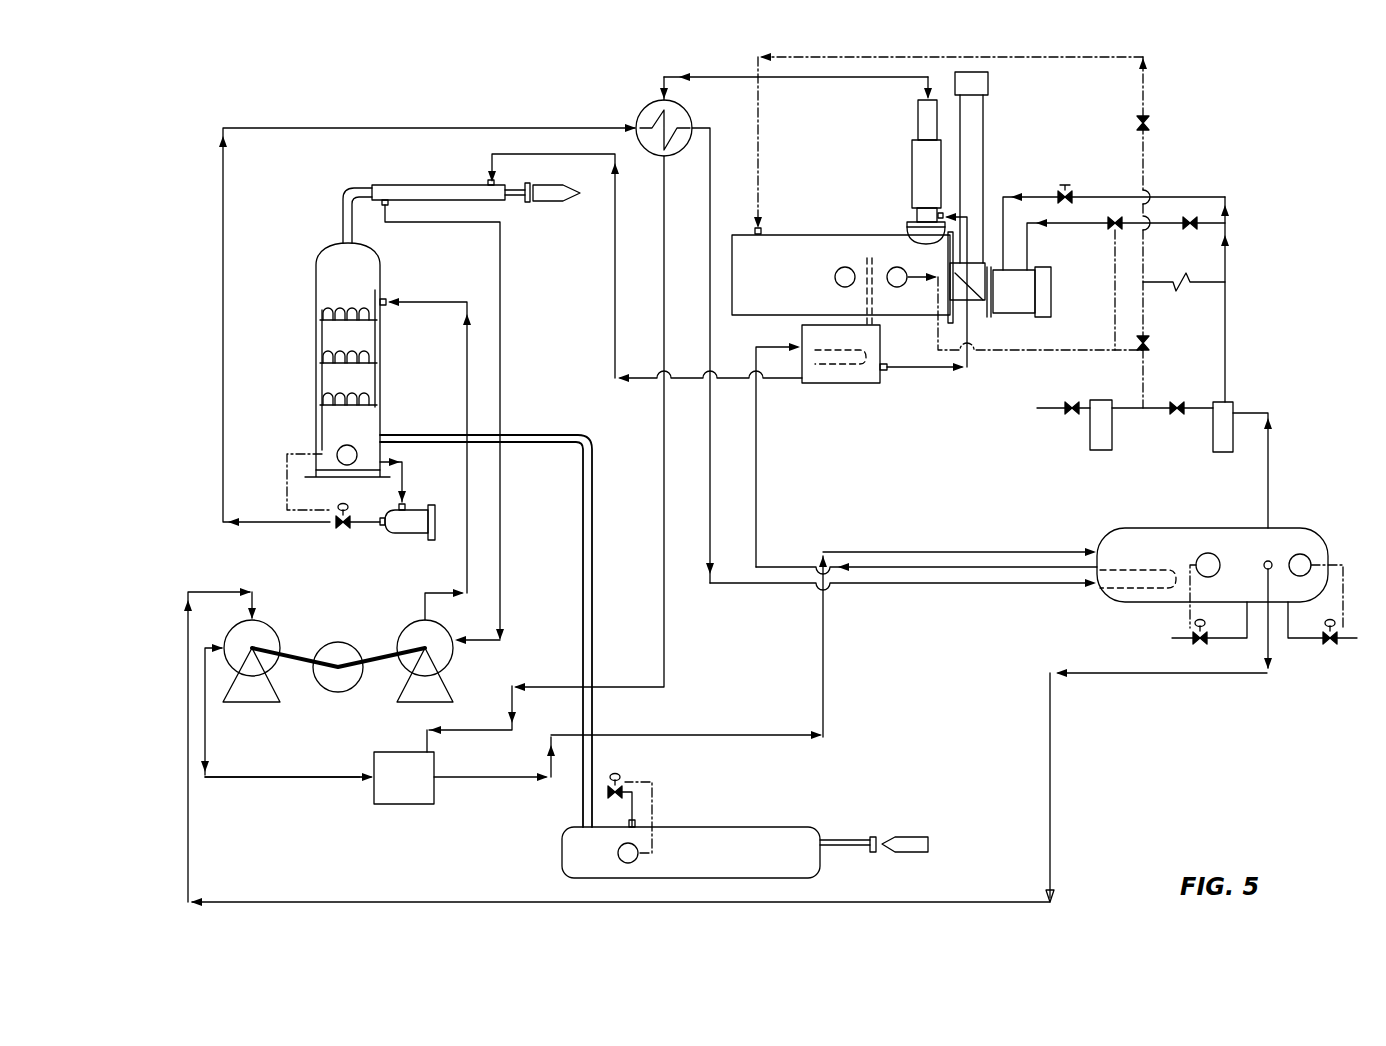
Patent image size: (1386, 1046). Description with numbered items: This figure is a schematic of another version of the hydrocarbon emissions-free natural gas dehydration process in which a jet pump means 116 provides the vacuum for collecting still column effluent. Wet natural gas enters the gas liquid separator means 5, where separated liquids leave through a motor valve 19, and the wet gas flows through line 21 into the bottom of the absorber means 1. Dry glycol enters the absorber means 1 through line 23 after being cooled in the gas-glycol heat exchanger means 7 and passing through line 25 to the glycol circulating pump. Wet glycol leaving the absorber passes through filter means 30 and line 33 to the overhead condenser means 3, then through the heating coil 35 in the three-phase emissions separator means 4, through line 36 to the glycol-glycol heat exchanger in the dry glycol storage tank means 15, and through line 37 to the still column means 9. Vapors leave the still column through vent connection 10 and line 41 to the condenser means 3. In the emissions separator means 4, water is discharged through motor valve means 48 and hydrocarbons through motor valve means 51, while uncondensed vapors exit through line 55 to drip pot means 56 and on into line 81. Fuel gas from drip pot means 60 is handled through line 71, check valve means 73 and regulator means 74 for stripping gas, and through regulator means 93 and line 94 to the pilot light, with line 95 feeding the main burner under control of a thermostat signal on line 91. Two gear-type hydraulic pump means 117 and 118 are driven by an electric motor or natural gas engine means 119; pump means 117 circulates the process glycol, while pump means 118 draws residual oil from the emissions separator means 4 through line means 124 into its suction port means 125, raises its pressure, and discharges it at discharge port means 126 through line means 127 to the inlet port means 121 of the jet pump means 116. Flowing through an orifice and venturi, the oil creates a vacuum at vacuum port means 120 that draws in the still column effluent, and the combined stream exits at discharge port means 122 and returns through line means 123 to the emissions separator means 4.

The absorber means 1 is at (317, 265).
The overhead condenser means 3 is at (688, 108).
The three-phase emissions separator means 4 is at (1290, 530).
The gas liquid separator means 5 is at (747, 825).
The gas-glycol heat exchanger means 7 is at (440, 185).
The still column means 9 is at (912, 193).
The vent connection 10 is at (925, 92).
The dry glycol storage tank means 15 is at (838, 384).
The motor valve 19 is at (618, 774).
The line 21 is at (582, 497).
The line 23 is at (425, 301).
The line 25 is at (502, 257).
The filter means 30 is at (393, 538).
The line 33 is at (223, 420).
The heating coil 35 is at (1125, 590).
The line 36 is at (960, 568).
The line 37 is at (953, 372).
The line 41 is at (824, 80).
The motor valve means 48 is at (1200, 647).
The motor valve means 51 is at (1330, 652).
The line 55 is at (1270, 465).
The drip pot means 56 is at (1233, 402).
The drip pot means 60 is at (1113, 425).
The line 71 is at (1147, 158).
The check valve means 73 is at (1185, 292).
The regulator means 74 is at (1152, 125).
The line 81 is at (1228, 302).
The line 91 is at (1090, 350).
The regulator means 93 is at (1065, 188).
The line 94 is at (1003, 193).
The line 95 is at (1030, 242).
The jet pump means 116 is at (432, 805).
The gear-type hydraulic pump means 117 is at (418, 622).
The gear-type hydraulic pump means 118 is at (278, 631).
The electric motor or natural gas engine means 119 is at (337, 692).
The vacuum port means 120 is at (432, 743).
The inlet port means 121 is at (372, 781).
The discharge port means 122 is at (437, 782).
The line means 123 is at (824, 648).
The line means 124 is at (1052, 724).
The suction port means 125 is at (257, 620).
The discharge port means 126 is at (240, 620).
The line means 127 is at (287, 781).